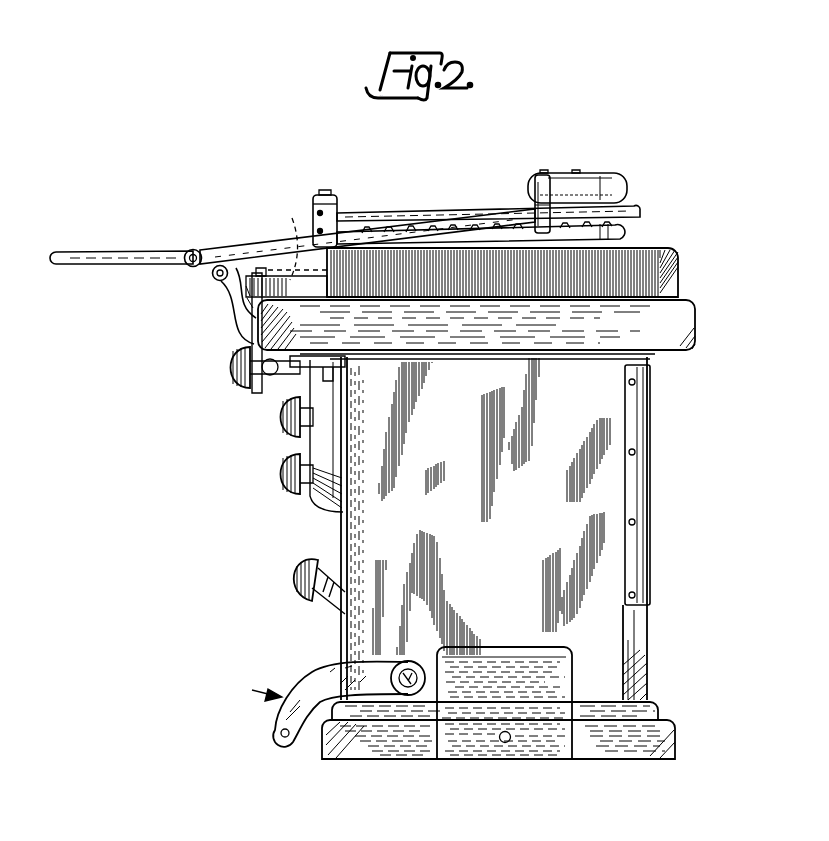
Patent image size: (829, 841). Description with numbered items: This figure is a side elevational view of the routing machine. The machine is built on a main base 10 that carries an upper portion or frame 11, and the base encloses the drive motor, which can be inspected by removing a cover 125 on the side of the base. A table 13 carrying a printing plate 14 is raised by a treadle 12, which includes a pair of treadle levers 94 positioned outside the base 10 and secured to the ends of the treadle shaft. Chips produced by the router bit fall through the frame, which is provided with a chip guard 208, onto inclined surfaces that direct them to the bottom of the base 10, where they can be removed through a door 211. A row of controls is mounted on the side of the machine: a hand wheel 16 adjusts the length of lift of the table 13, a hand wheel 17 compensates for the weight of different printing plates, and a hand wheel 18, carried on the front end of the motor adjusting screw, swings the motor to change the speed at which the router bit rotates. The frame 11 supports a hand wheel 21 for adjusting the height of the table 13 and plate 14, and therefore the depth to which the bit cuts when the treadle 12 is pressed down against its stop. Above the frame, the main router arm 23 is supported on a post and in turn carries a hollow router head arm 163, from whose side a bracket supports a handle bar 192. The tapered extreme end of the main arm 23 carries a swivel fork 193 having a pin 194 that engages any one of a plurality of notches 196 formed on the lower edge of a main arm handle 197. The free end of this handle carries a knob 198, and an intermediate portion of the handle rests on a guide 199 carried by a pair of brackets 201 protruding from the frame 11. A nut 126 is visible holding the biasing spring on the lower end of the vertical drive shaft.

The handle bar 192 is at (112, 252).
The knob 198 is at (193, 249).
The main arm handle 197 is at (277, 248).
The printing plate 14 is at (299, 239).
The nut 126 is at (337, 211).
The router head arm 163 is at (430, 215).
The notches 196 is at (622, 232).
The pin 194 is at (534, 215).
The swivel fork 193 is at (565, 192).
The main router arm 23 is at (629, 190).
The chip guard 208 is at (678, 280).
The frame 11 is at (696, 328).
The guide 199 is at (213, 276).
The table 13 is at (250, 306).
The brackets 201 is at (246, 328).
The hand wheel 21 is at (228, 366).
The hand wheel 18 is at (282, 412).
The hand wheel 17 is at (282, 472).
The hand wheel 16 is at (300, 574).
The cover 125 is at (650, 493).
The main base 10 is at (625, 655).
The treadle levers 94 is at (314, 671).
The treadle 12 is at (254, 692).
The door 211 is at (492, 756).